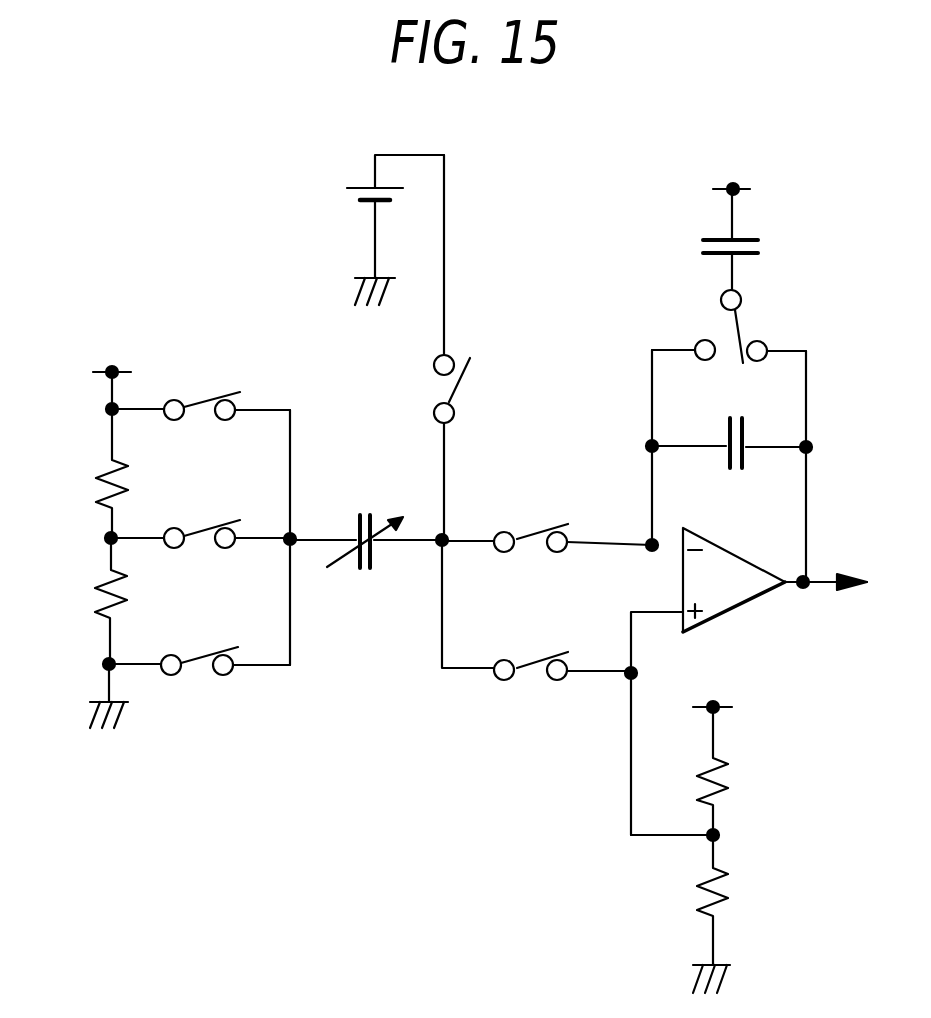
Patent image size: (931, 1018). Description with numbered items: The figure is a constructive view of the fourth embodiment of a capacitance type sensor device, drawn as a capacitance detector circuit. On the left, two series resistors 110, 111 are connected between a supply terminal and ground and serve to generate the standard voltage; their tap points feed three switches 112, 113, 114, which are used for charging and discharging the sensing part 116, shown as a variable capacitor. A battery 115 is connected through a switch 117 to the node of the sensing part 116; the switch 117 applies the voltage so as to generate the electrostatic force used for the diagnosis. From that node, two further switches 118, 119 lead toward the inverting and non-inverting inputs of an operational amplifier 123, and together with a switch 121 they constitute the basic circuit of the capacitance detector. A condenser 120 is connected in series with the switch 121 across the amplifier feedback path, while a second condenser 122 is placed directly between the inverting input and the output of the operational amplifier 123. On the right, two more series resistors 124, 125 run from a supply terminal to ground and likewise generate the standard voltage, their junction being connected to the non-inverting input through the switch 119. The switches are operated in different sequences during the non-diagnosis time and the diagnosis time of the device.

The resistor 110 is at (100, 487).
The resistor 111 is at (97, 597).
The switch 112 is at (213, 393).
The switch 113 is at (210, 527).
The switch 114 is at (208, 657).
The battery 115 is at (377, 192).
The sensing part 116 is at (377, 512).
The switch 117 is at (453, 393).
The switch 118 is at (543, 533).
The switch 119 is at (542, 660).
The condenser 120 is at (745, 247).
The switch 121 is at (742, 332).
The condenser 122 is at (743, 437).
The operational amplifier 123 is at (722, 587).
The resistor 124 is at (722, 777).
The resistor 125 is at (720, 888).